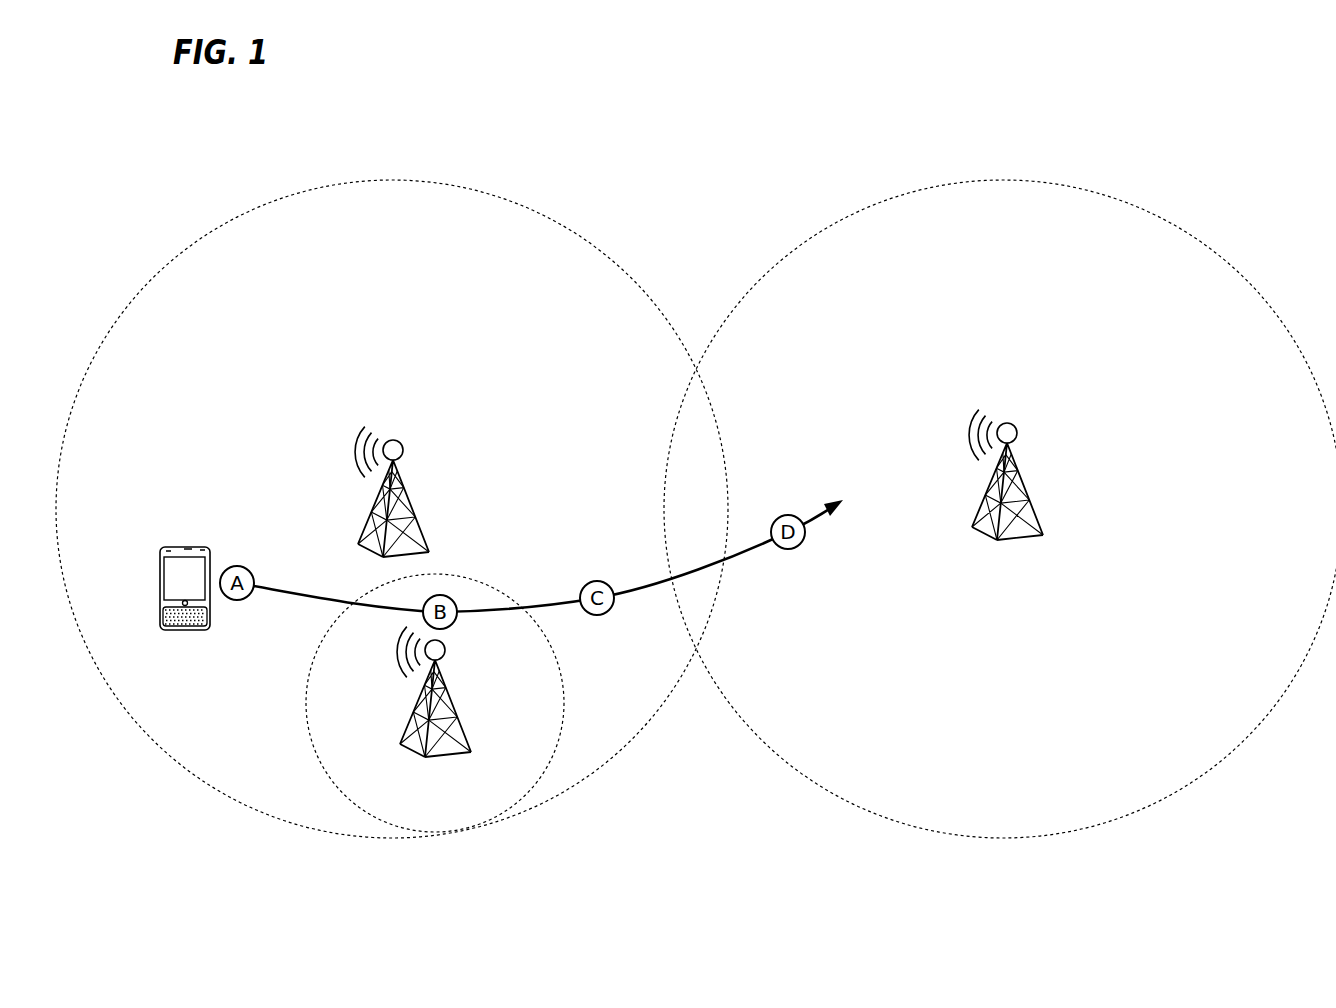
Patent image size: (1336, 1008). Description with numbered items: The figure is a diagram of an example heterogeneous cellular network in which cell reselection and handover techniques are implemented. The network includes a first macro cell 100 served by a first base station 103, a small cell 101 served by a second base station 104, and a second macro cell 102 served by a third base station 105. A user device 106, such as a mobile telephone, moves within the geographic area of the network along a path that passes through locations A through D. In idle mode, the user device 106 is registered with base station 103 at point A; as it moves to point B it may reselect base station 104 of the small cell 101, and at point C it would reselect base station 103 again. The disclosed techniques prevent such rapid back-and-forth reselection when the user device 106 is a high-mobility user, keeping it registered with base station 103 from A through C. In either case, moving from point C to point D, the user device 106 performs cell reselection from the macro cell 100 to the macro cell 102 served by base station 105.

The first macro cell 100 is at (532, 209).
The small cell 101 is at (568, 702).
The second macro cell 102 is at (870, 207).
The first base station 103 is at (368, 524).
The second base station 104 is at (408, 724).
The third base station 105 is at (975, 508).
The user device 106 is at (208, 562).